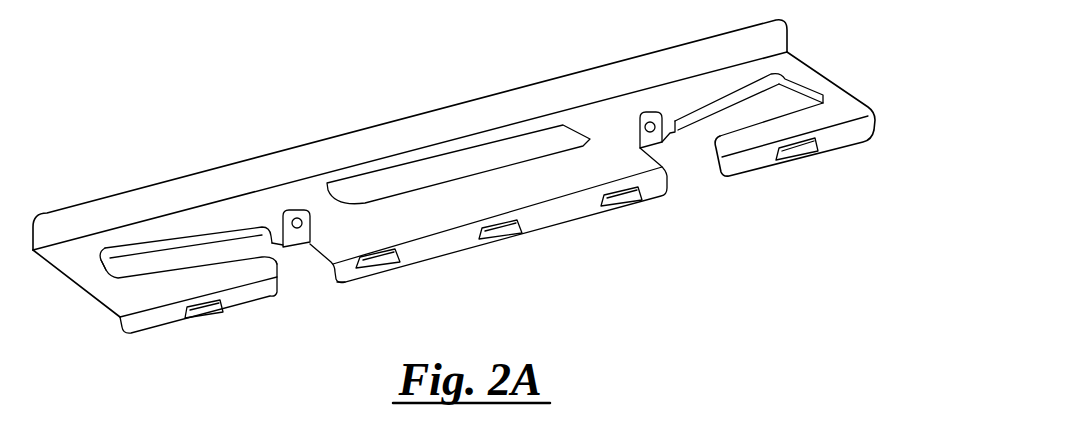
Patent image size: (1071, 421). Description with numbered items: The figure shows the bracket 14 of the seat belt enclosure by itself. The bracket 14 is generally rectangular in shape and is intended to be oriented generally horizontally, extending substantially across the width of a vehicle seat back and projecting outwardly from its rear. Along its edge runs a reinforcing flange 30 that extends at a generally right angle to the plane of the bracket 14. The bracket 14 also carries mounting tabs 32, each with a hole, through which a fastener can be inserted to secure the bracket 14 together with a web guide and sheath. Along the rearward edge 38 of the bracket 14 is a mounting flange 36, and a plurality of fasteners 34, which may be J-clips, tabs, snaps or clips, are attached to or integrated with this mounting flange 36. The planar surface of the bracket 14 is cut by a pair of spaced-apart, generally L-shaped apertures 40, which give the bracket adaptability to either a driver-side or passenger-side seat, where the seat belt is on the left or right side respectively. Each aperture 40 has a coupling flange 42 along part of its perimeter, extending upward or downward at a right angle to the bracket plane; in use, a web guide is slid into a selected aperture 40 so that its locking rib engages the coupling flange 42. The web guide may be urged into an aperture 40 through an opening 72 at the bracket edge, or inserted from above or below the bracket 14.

The bracket 14 is at (172, 140).
The reinforcing flange 30 is at (78, 209).
The mounting tab 32 is at (297, 234).
The fastener 34 is at (206, 308).
The mounting flange 36 is at (157, 326).
The rearward edge 38 is at (493, 273).
The L-shaped aperture 40 is at (157, 267).
The coupling flange 42 is at (112, 273).
The opening 72 is at (306, 294).